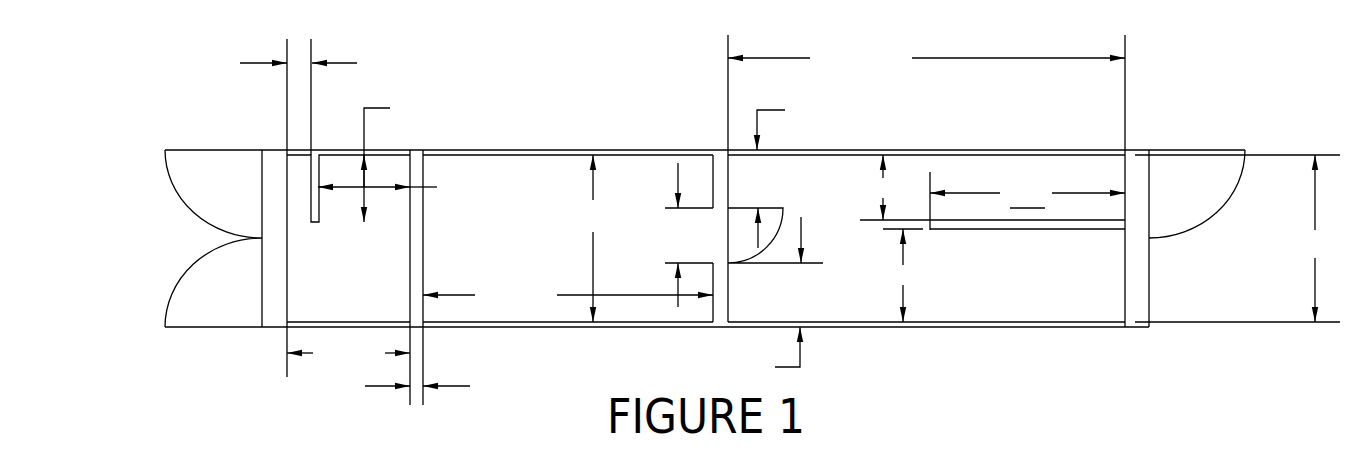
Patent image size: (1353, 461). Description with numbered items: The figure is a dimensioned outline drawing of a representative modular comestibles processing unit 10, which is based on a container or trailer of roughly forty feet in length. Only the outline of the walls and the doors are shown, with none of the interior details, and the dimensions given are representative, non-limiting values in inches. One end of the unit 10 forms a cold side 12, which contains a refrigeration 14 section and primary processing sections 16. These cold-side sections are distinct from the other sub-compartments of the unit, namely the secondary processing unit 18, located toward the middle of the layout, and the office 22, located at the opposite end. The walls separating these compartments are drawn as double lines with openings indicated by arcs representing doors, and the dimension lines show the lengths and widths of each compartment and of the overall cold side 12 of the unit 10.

The modular comestibles processing unit 10 is at (665, 44).
The cold side 12 is at (926, 49).
The refrigeration 14 is at (988, 172).
The primary processing sections 16 is at (1010, 283).
The secondary processing unit 18 is at (548, 203).
The office 22 is at (327, 275).